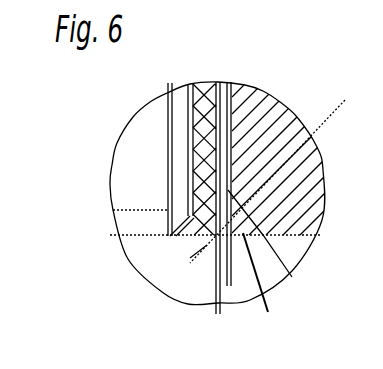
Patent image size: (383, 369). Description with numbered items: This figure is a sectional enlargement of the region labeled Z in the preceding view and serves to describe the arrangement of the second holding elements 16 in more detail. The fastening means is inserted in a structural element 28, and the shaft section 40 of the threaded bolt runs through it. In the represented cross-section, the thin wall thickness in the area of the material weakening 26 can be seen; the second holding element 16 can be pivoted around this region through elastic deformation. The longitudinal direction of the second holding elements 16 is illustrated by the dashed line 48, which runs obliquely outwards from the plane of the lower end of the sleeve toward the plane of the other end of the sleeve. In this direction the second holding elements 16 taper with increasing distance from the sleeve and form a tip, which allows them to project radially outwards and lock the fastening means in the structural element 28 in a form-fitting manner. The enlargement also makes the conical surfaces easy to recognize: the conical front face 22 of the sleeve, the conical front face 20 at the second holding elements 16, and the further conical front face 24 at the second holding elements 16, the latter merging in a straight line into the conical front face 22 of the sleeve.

The second holding element 16 is at (266, 290).
The conical front face 20 is at (187, 278).
The conical front face of the sleeve 22 is at (200, 235).
The further conical front face 24 is at (218, 314).
The material weakening 26 is at (205, 233).
The structural element 28 is at (262, 106).
The shaft section 40 is at (133, 192).
The dashed line 48 is at (174, 301).
The section Z is at (198, 130).